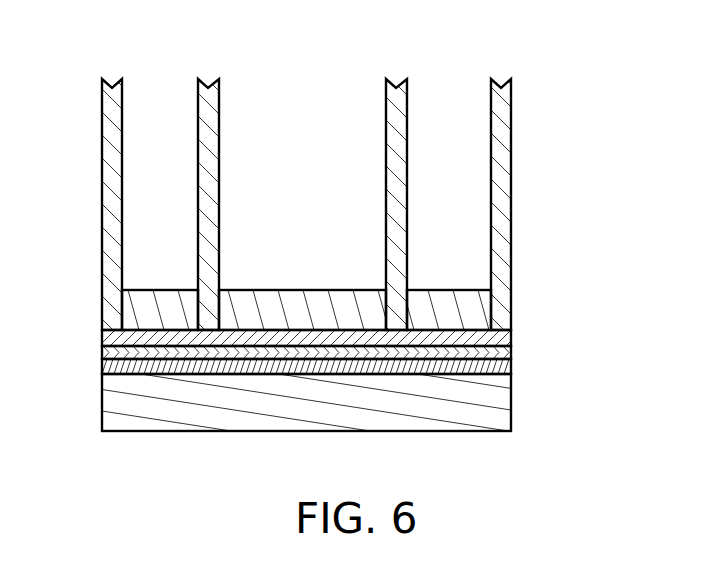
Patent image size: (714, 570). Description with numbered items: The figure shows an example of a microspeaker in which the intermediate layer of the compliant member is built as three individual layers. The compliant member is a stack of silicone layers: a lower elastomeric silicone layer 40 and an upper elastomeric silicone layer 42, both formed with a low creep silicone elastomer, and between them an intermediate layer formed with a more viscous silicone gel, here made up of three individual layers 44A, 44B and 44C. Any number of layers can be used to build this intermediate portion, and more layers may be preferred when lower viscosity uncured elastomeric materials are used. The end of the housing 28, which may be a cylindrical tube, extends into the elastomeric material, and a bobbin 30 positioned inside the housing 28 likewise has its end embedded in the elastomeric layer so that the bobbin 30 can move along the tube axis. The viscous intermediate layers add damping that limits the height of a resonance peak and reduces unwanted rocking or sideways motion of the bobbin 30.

The housing 28 is at (101, 128).
The bobbin 30 is at (219, 165).
The lower elastomeric silicone layer 40 is at (505, 412).
The upper elastomeric silicone layer 42 is at (261, 296).
The first intermediate layer 44A is at (505, 340).
The second intermediate layer 44B is at (504, 351).
The third intermediate layer 44C is at (505, 368).